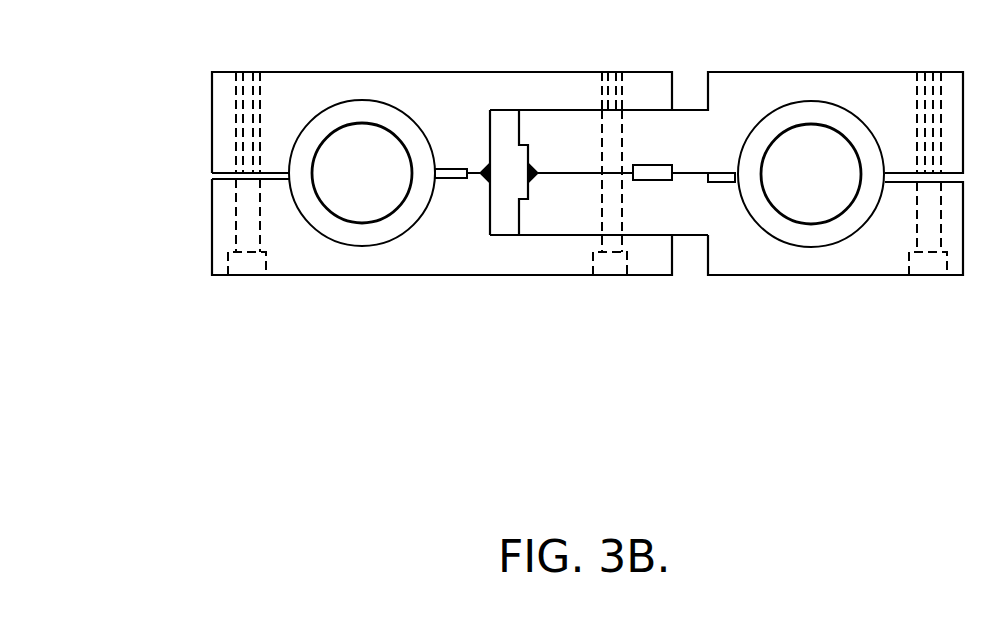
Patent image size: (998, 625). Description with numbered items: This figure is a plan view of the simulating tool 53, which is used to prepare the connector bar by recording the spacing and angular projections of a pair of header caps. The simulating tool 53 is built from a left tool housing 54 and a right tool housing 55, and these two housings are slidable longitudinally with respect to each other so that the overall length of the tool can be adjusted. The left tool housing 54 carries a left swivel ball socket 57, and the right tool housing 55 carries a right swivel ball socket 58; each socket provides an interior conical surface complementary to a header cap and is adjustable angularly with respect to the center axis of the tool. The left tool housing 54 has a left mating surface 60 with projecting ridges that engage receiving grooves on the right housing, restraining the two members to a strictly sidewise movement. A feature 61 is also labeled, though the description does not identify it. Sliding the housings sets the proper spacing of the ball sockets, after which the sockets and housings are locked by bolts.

The simulating tool 53 is at (505, 275).
The left tool housing 54 is at (390, 72).
The right tool housing 55 is at (845, 276).
The left swivel ball socket 57 is at (353, 113).
The right swivel ball socket 58 is at (823, 110).
The left mating surface 60 is at (503, 110).
The connecting bridge / gap 61 is at (708, 93).